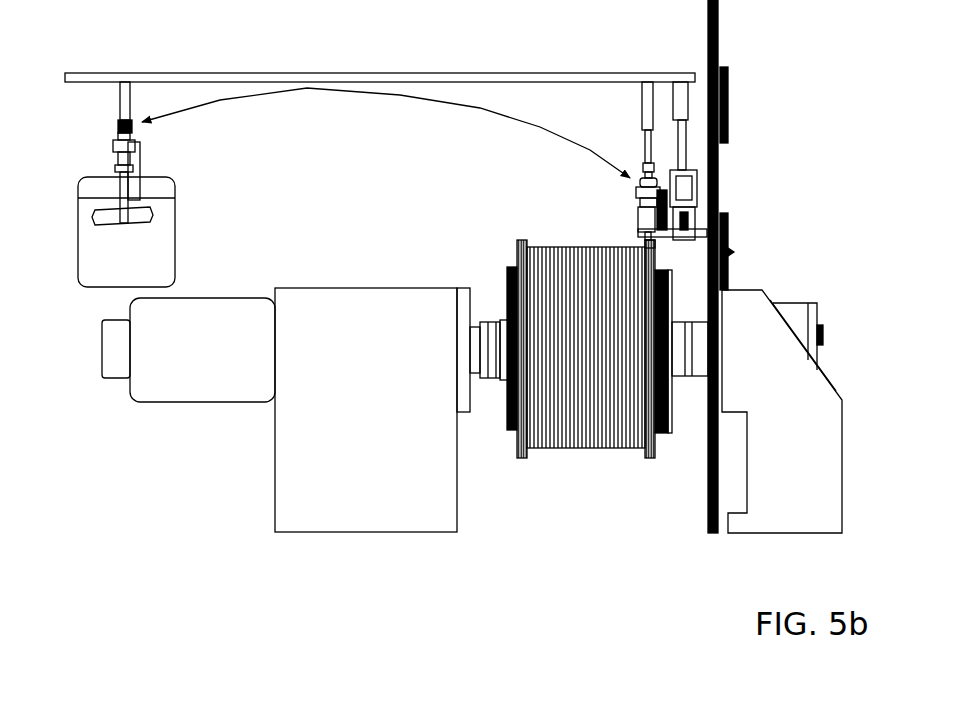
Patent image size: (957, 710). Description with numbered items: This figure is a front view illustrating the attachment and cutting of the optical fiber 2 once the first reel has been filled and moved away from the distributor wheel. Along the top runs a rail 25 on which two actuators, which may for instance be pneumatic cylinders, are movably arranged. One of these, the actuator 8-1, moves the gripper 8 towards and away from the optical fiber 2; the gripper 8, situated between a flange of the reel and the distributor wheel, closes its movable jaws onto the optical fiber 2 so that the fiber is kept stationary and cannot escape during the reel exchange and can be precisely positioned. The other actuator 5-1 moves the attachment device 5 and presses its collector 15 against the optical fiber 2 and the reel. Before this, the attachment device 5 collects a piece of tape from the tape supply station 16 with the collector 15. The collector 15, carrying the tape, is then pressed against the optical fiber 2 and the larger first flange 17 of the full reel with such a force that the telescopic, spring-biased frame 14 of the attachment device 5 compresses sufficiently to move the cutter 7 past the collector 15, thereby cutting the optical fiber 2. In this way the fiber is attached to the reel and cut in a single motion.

The rail 25 is at (285, 69).
The actuator 5-1 is at (114, 104).
The attachment device 5 is at (109, 168).
The tape supply station 16 is at (179, 223).
The collector 15 is at (125, 223).
The spring-biased frame 14 is at (632, 213).
The actuator 8-1 is at (695, 107).
The gripper 8 is at (700, 183).
The optical fiber 2 is at (701, 231).
The cutter 7 is at (663, 249).
The larger first flange 17 is at (647, 465).